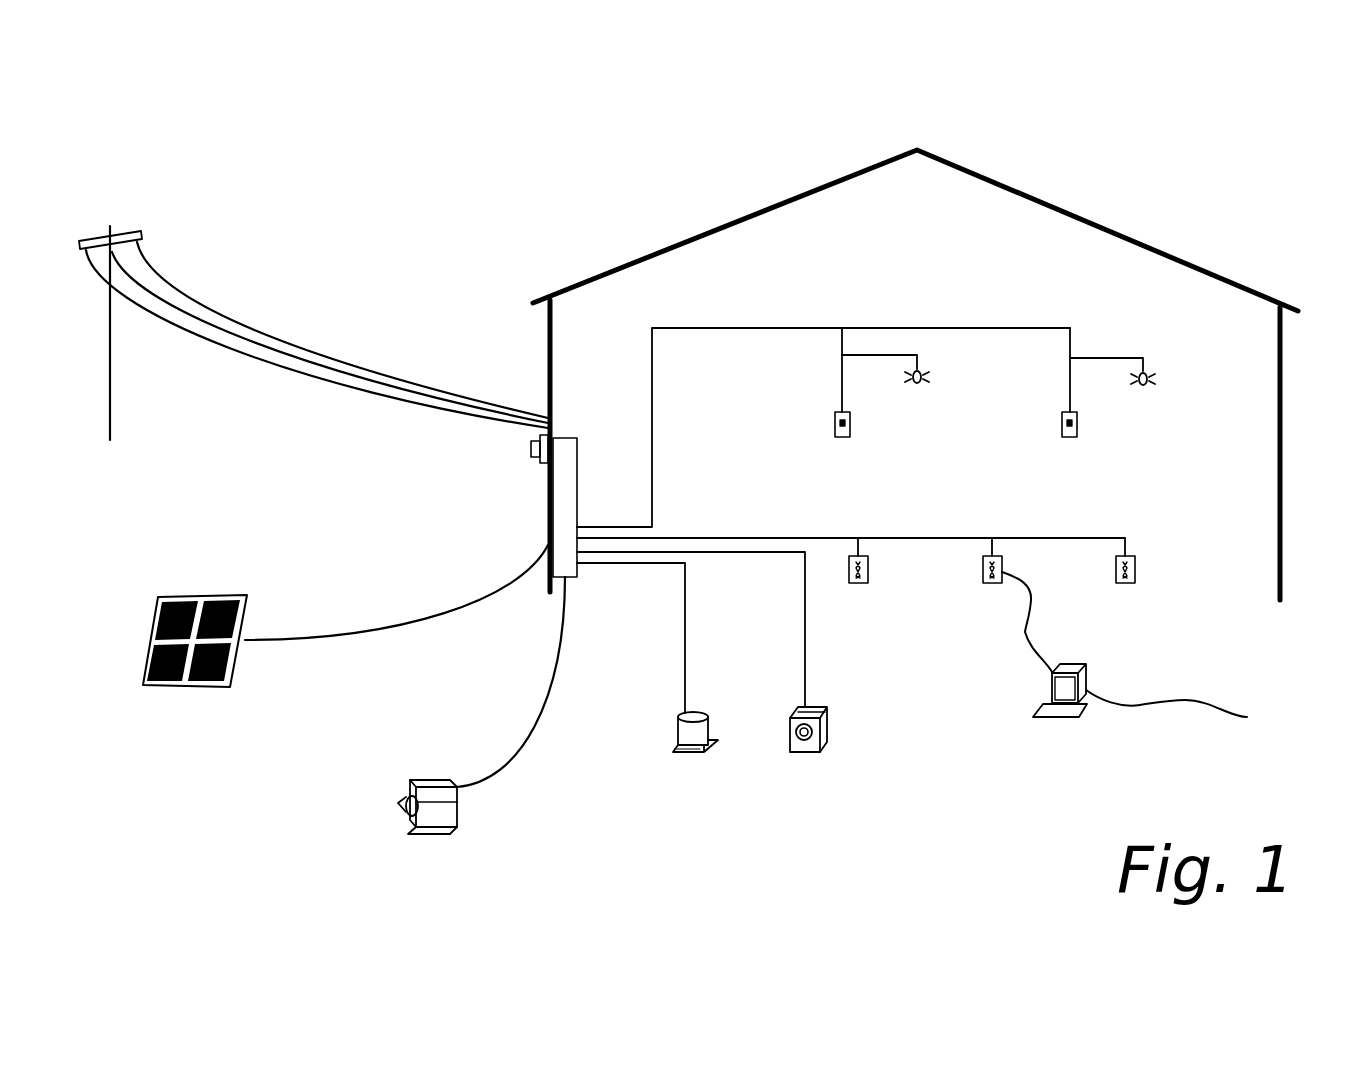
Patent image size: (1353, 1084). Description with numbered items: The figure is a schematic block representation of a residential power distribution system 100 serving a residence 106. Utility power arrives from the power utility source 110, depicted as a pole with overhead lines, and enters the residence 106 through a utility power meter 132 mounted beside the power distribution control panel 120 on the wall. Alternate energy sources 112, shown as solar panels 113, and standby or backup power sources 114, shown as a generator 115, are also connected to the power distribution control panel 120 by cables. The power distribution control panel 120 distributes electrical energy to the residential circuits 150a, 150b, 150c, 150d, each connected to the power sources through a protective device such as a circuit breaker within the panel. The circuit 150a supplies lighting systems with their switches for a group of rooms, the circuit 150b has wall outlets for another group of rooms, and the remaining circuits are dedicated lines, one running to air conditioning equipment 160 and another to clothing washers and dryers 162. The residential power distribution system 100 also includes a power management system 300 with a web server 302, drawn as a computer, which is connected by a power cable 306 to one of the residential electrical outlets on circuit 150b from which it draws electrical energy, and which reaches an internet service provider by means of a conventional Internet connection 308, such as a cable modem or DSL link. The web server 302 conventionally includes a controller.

The residential power distribution system 100 is at (560, 150).
The power utility source 110 is at (158, 252).
The residence 106 is at (573, 289).
The power distribution control panel 120 is at (578, 441).
The utility power meter 132 is at (532, 447).
The residential circuit 150a is at (699, 327).
The residential circuit 150b is at (762, 537).
The residential circuit 150c is at (805, 648).
The residential circuit 150d is at (685, 648).
The air conditioning 160 is at (685, 754).
The clothing washers and dryers 162 is at (802, 754).
The solar panels 113 is at (174, 598).
The alternate energy sources 112 is at (158, 744).
The generators 115 is at (425, 780).
The standby or backup power sources 114 is at (370, 833).
The web server 302 is at (1085, 705).
The power cable 306 is at (1025, 632).
The Internet connection 308 is at (1153, 704).
The power management system 300 is at (1018, 743).